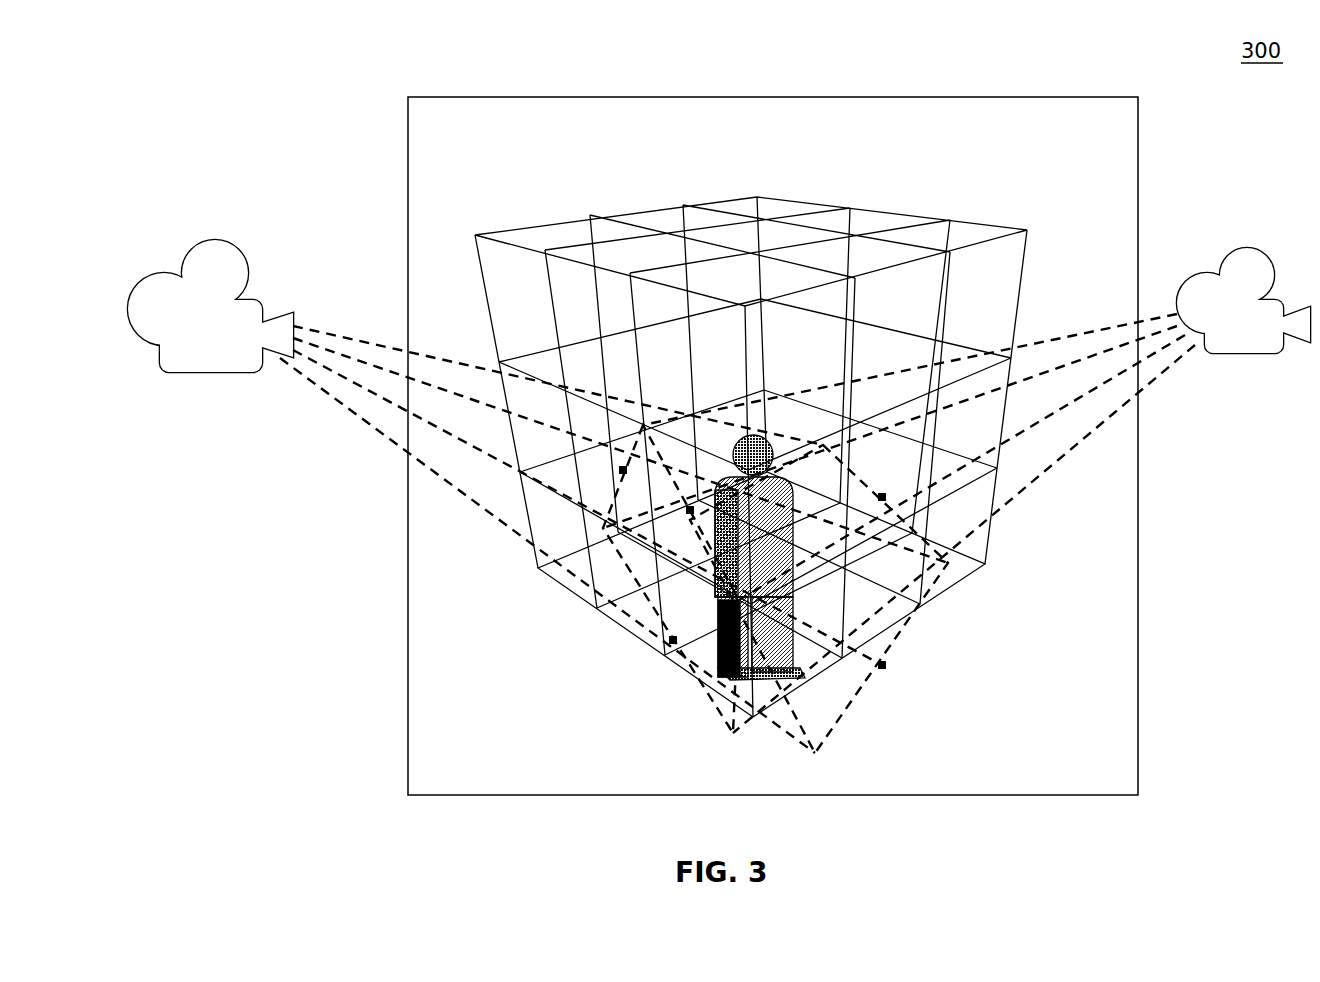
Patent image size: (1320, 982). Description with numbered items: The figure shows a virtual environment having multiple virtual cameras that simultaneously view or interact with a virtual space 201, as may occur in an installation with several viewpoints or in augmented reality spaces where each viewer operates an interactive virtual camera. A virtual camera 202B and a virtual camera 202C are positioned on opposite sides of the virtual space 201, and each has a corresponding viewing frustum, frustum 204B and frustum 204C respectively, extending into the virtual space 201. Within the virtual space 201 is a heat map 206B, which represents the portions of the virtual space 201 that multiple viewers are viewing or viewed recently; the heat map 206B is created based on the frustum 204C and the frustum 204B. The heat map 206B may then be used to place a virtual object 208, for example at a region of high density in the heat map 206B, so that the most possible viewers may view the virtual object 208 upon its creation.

The virtual space 201 is at (521, 97).
The virtual camera 202B is at (208, 240).
The virtual camera 202C is at (1247, 248).
The frustum 204B is at (900, 643).
The frustum 204C is at (708, 700).
The heat map 206B is at (766, 195).
The virtual object 208 is at (777, 450).